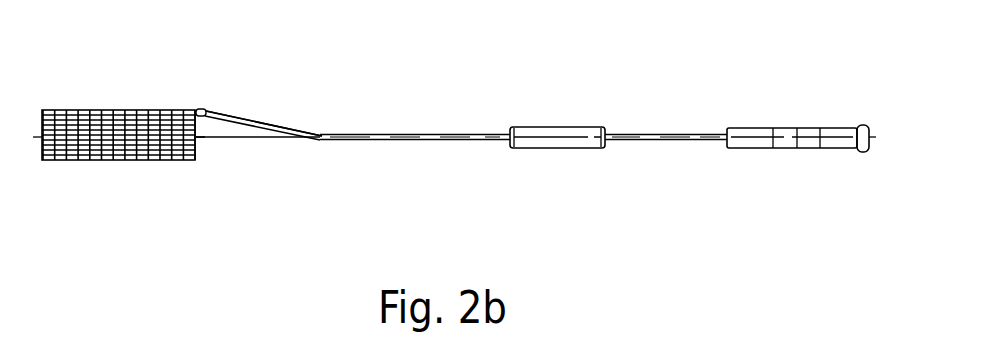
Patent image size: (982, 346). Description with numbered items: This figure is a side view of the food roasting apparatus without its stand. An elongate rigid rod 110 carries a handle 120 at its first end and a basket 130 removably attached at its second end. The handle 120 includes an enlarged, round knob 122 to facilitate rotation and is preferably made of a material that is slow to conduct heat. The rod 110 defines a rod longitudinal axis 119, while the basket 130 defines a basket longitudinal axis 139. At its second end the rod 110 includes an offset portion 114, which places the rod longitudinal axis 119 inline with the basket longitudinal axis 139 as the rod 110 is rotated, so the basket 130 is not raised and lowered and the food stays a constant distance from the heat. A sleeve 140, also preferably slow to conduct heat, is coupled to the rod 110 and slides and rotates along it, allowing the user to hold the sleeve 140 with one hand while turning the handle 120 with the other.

The elongate rigid rod 110 is at (480, 132).
The offset portion 114 is at (257, 122).
The rod longitudinal axis 119 is at (253, 139).
The handle 120 is at (748, 127).
The round knob 122 is at (860, 128).
The basket 130 is at (95, 92).
The basket longitudinal axis 139 is at (205, 138).
The sleeve 140 is at (557, 127).